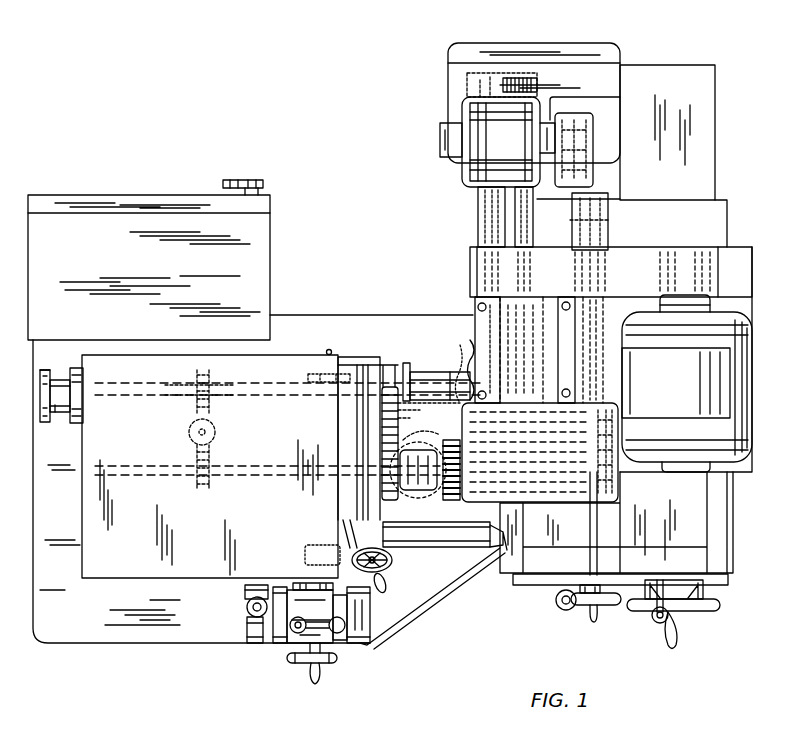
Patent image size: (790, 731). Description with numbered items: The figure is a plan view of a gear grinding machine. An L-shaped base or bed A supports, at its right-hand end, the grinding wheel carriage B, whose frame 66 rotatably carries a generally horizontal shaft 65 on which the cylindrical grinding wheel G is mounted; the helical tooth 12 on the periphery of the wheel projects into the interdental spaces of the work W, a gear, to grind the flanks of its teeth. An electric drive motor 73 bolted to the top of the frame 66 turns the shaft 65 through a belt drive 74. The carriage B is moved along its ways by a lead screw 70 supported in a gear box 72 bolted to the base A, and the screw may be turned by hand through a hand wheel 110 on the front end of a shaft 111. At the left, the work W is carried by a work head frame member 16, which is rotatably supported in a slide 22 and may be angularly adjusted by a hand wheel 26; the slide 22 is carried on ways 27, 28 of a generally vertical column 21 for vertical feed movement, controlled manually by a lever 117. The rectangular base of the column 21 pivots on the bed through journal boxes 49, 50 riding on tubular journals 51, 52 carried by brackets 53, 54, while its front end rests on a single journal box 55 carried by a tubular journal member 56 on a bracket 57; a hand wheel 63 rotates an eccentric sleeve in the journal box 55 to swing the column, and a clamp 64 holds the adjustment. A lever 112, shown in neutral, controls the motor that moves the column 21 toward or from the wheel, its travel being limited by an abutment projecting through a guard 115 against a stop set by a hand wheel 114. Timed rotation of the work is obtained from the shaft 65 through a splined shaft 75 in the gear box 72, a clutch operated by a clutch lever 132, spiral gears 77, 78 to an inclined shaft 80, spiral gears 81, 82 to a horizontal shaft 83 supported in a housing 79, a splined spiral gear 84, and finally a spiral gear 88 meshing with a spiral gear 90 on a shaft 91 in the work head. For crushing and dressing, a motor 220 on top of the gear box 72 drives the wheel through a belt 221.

The column 21 is at (105, 572).
The journal box 49 is at (84, 394).
The bracket 53 is at (42, 372).
The tubular journal 51 is at (60, 405).
The horizontal shaft 83 is at (265, 393).
The horizontal shaft 91 is at (258, 468).
The spiral gear 84 is at (192, 376).
The spiral gear 88 is at (186, 430).
The spiral gear 90 is at (212, 486).
The way 28 is at (325, 373).
The slide 22 is at (345, 407).
The work head frame member 16 is at (370, 515).
The way 27 is at (330, 541).
The journal box 50 is at (385, 368).
The tubular journal 52 is at (407, 365).
The bracket 54 is at (432, 381).
The spiral gear 81 is at (470, 366).
The helical tooth 12 is at (423, 487).
The work W is at (426, 492).
The grinding wheel G is at (447, 488).
The hand wheel 26 is at (395, 563).
The guard 115 is at (473, 545).
The journal box 55 is at (307, 590).
The lever 112 is at (246, 606).
The bracket 57 is at (250, 628).
The tubular journal member 56 is at (263, 647).
The hand wheel 63 is at (343, 661).
The clamp 64 is at (360, 645).
The frame 66 is at (735, 262).
The belt drive 74 is at (630, 267).
The shaft 111 is at (598, 531).
The housing 79 is at (475, 324).
The shaft 65 is at (556, 382).
The lead screw 70 is at (600, 336).
The spiral gear 82 is at (540, 440).
The electric drive motor 73 is at (650, 390).
The grinding wheel carriage B is at (740, 462).
The gear box 72 is at (607, 115).
The spiral gear 78 is at (456, 76).
The spiral gear 77 is at (527, 80).
The motor 220 is at (505, 152).
The belt 221 is at (593, 173).
The shaft 75 is at (500, 213).
The inclined shaft 80 is at (490, 236).
The lever 117 is at (557, 607).
The hand wheel 110 is at (565, 613).
The hand wheel 114 is at (700, 613).
The clutch lever 132 is at (657, 622).
The base A is at (90, 632).